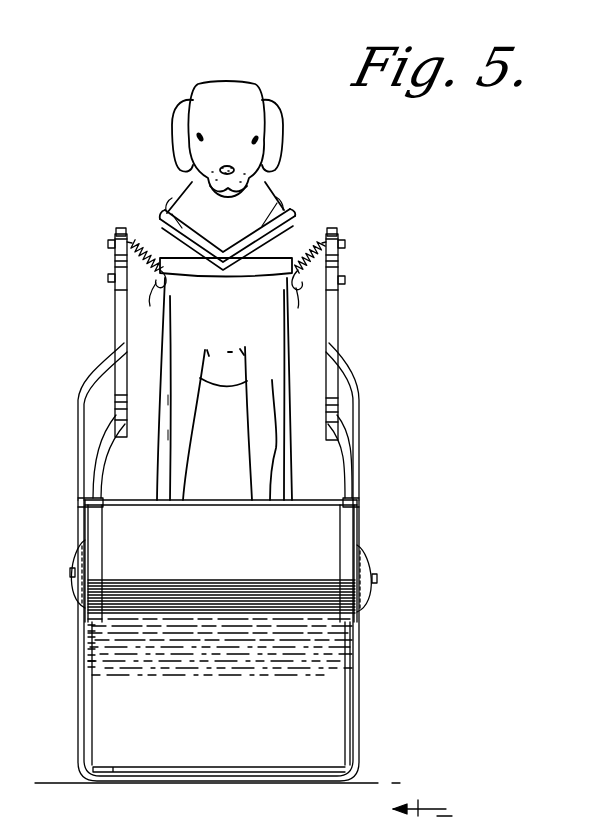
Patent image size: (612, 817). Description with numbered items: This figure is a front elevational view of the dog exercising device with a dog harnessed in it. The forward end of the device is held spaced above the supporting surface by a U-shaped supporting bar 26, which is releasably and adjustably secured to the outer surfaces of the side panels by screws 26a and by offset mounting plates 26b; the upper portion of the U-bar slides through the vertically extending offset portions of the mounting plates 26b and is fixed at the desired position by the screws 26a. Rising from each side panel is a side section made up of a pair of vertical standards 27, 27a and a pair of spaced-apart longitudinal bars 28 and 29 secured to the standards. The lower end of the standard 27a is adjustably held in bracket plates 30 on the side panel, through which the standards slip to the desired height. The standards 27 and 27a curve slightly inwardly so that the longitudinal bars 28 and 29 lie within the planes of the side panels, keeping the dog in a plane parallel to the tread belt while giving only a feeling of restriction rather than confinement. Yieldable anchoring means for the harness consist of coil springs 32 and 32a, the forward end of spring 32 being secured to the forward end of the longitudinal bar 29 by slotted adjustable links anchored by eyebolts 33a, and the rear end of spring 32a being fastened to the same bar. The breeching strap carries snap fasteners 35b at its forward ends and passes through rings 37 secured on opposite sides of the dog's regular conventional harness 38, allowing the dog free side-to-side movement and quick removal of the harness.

The U-shaped supporting bar 26 is at (84, 711).
The screws 26a is at (70, 572).
The offset mounting plates 26b is at (78, 606).
The vertical standard 27 is at (90, 385).
The vertical standard 27a is at (100, 450).
The longitudinal bar 28 is at (115, 318).
The longitudinal bar 29 is at (115, 232).
The bracket plates 30 is at (364, 557).
The coil spring 32 is at (160, 240).
The coil spring 32a is at (150, 297).
The eyebolts 33a is at (108, 246).
The snap fasteners 35b is at (305, 259).
The rings 37 is at (298, 308).
The harness 38 is at (186, 255).